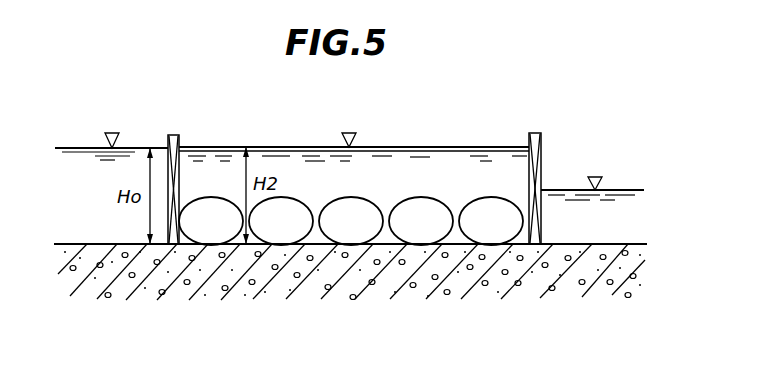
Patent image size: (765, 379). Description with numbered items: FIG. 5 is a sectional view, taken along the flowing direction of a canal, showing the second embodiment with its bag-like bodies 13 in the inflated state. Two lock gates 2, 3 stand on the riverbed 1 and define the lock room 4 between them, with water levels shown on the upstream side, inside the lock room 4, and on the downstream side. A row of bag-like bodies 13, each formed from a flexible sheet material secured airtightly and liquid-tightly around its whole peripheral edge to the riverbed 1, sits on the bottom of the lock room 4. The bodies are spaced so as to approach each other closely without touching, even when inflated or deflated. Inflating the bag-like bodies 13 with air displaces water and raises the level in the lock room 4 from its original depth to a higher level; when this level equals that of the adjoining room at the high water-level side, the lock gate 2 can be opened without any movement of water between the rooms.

The riverbed 1 is at (594, 268).
The lock gate 2 is at (177, 135).
The lock gate 3 is at (537, 133).
The lock room 4 is at (364, 142).
The bag-like bodies 13 is at (422, 201).